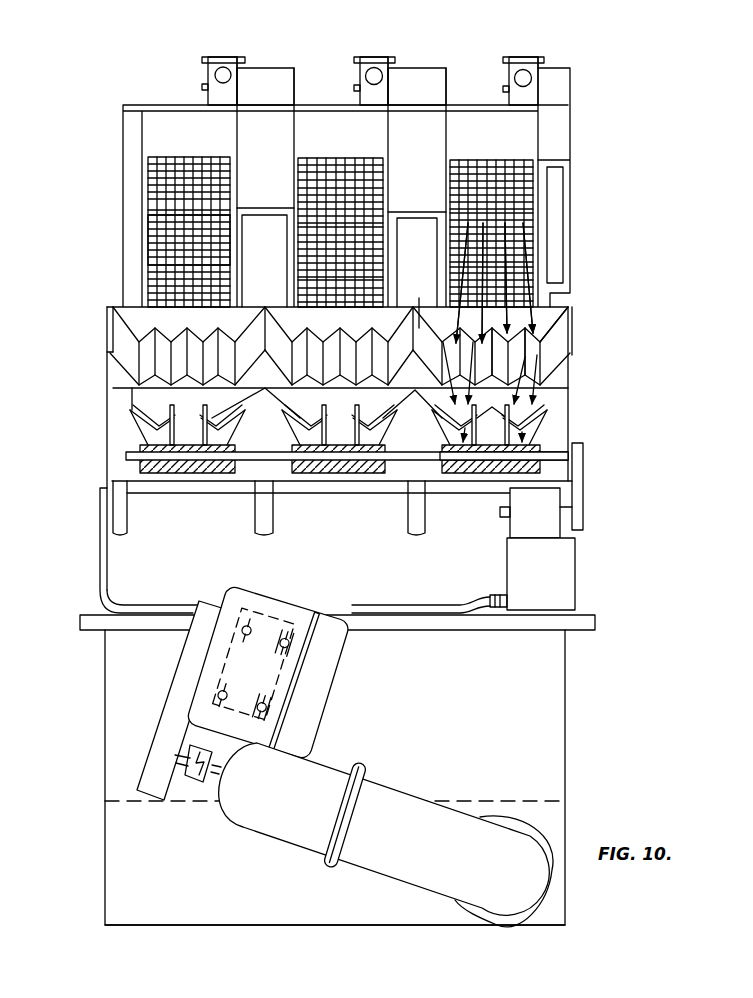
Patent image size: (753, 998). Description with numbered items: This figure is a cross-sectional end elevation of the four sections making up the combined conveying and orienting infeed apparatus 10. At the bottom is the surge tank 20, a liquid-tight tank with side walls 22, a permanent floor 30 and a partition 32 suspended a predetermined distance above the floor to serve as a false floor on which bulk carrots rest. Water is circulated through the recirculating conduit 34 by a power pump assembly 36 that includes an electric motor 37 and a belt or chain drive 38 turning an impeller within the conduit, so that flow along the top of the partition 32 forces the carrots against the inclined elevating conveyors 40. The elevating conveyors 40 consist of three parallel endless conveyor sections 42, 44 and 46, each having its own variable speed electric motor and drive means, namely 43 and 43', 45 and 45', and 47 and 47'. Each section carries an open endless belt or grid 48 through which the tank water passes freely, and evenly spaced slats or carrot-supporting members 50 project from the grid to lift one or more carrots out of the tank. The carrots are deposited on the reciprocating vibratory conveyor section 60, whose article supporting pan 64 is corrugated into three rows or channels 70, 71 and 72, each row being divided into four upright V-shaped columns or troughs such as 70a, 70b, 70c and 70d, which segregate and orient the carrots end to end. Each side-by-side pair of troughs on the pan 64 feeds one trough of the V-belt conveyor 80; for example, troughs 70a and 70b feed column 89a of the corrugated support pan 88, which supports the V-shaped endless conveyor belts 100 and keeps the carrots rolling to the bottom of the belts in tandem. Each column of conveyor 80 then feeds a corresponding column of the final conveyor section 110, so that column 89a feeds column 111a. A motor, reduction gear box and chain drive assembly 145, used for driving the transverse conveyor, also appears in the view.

The combined conveying and orienting infeed apparatus 10 is at (586, 46).
The surge tank 20 is at (104, 663).
The side walls 22 is at (566, 742).
The permanent floor 30 is at (133, 925).
The partition 32 is at (491, 803).
The recirculating conduit 34 is at (411, 796).
The power pump assembly 36 is at (160, 709).
The electric motor 37 is at (270, 687).
The belt or chain drive 38 is at (190, 660).
The inclined elevating conveyors 40 is at (122, 128).
The endless conveyor section 42 is at (483, 160).
The variable speed electric motor 43 is at (527, 57).
The belt or chain drive means 43' is at (580, 183).
The endless conveyor section 44 is at (333, 159).
The variable speed electric motor 45 is at (383, 57).
The belt or chain drive means 45' is at (423, 68).
The endless conveyor section 46 is at (184, 157).
The variable speed electric motor 47 is at (223, 60).
The belt or chain drive means 47' is at (274, 68).
The endless belt or grid 48 is at (168, 242).
The slats or carrot-supporting members 50 is at (166, 211).
The reciprocating vibratory conveyor section 60 is at (100, 320).
The article supporting pan 64 is at (106, 340).
The row or channel 70 is at (480, 327).
The column or trough 70a is at (557, 341).
The column or trough 70b is at (518, 367).
The column or trough 70c is at (484, 374).
The column or trough 70d is at (416, 304).
The row or channel 71 is at (348, 327).
The row or channel 72 is at (200, 327).
The V-belt conveyor 80 is at (100, 383).
The corrugated support pan 88 is at (128, 401).
The column or trough 89a is at (523, 409).
The endless conveyor belts 100 is at (218, 406).
The final conveyor section 110 is at (98, 438).
The column or trough 111a is at (526, 443).
The motor, reduction gear box and chain drive assembly 145 is at (585, 496).